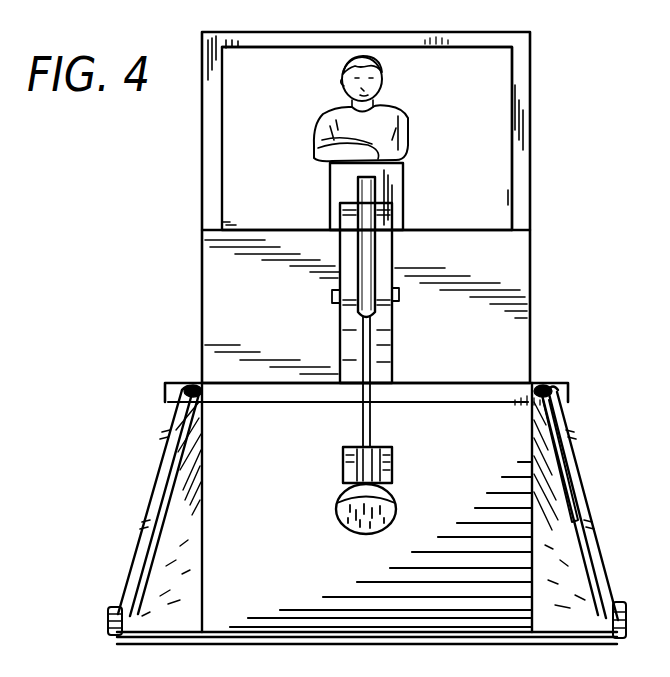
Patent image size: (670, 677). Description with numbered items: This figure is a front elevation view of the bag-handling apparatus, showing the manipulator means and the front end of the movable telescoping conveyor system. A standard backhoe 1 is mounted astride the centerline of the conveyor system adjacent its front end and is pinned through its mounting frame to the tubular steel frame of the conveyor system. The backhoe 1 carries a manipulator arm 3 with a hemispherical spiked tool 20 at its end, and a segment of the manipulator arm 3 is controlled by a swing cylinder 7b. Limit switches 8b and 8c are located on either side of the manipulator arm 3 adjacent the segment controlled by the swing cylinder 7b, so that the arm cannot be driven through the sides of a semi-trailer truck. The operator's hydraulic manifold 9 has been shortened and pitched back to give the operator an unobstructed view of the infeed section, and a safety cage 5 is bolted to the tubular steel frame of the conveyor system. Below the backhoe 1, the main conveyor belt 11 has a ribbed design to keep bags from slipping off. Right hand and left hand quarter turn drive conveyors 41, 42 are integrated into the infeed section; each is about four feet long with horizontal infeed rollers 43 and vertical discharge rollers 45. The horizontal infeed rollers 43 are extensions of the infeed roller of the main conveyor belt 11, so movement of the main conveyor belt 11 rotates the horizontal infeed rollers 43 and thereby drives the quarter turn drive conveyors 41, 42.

The backhoe 1 is at (558, 111).
The manipulator arm 3 is at (396, 268).
The safety cage 5 is at (520, 28).
The swing cylinder 7b is at (362, 345).
The limit switch 8b is at (330, 292).
The limit switch 8c is at (404, 298).
The operator's hydraulic manifold 9 is at (409, 198).
The main conveyor belt 11 is at (248, 448).
The hemispherical spiked tool 20 is at (338, 526).
The right hand quarter turn drive conveyor 41 is at (190, 536).
The left hand quarter turn drive conveyor 42 is at (560, 515).
The horizontal infeed rollers 43 is at (110, 629).
The vertical discharge rollers 45 is at (191, 381).